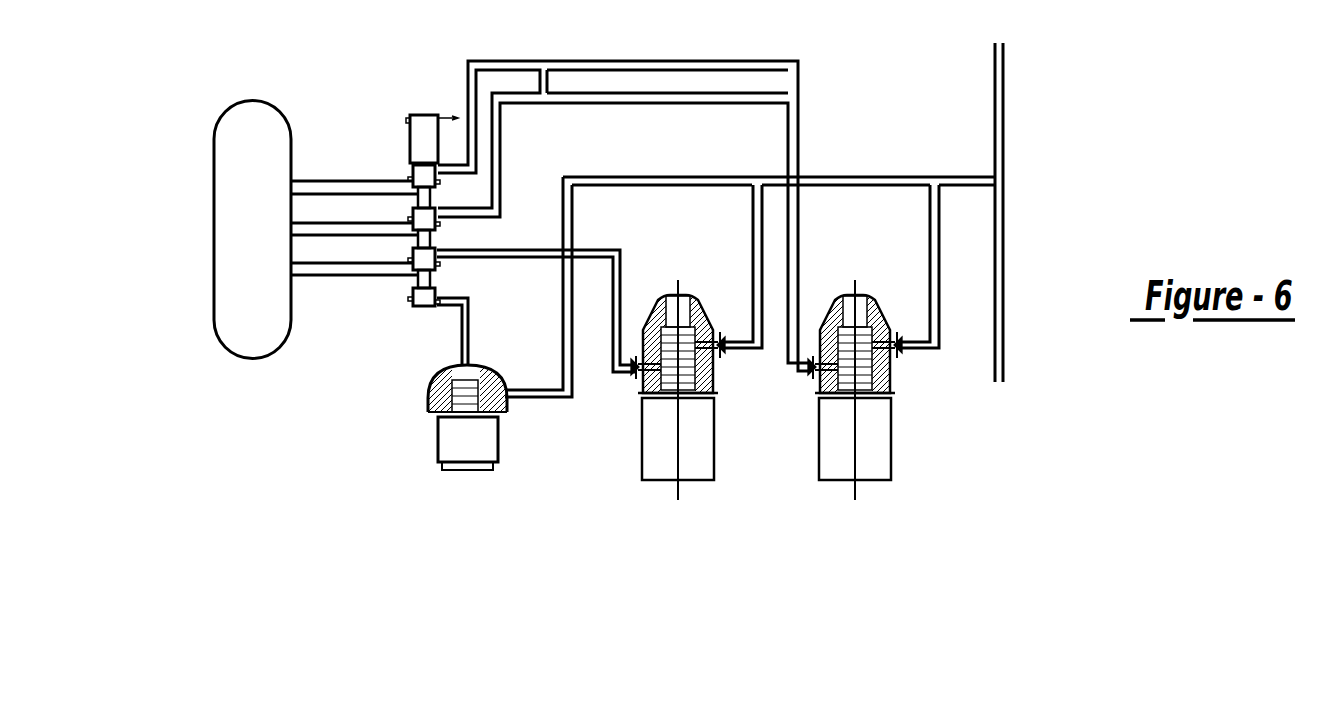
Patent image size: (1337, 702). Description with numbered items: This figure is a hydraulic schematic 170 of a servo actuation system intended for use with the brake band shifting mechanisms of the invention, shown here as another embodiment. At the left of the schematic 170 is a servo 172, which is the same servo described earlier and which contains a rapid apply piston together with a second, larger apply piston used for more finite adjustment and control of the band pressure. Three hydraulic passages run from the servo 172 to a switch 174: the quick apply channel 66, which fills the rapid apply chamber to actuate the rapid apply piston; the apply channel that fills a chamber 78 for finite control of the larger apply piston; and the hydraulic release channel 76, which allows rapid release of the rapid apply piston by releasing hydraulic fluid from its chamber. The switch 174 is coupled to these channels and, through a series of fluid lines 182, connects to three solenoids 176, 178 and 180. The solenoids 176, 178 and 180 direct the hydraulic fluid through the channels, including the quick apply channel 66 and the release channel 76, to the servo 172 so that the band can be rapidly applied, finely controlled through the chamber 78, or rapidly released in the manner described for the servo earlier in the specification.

The rapid apply/release channel 66 is at (326, 180).
The chamber 78 is at (355, 222).
The hydraulic release channel 76 is at (333, 260).
The hydraulic schematic 170 is at (314, 544).
The servo 172 is at (252, 358).
The switch 174 is at (410, 143).
The solenoid 176 is at (438, 437).
The solenoid 178 is at (640, 455).
The solenoid 180 is at (817, 455).
The fluid lines 182 is at (505, 255).